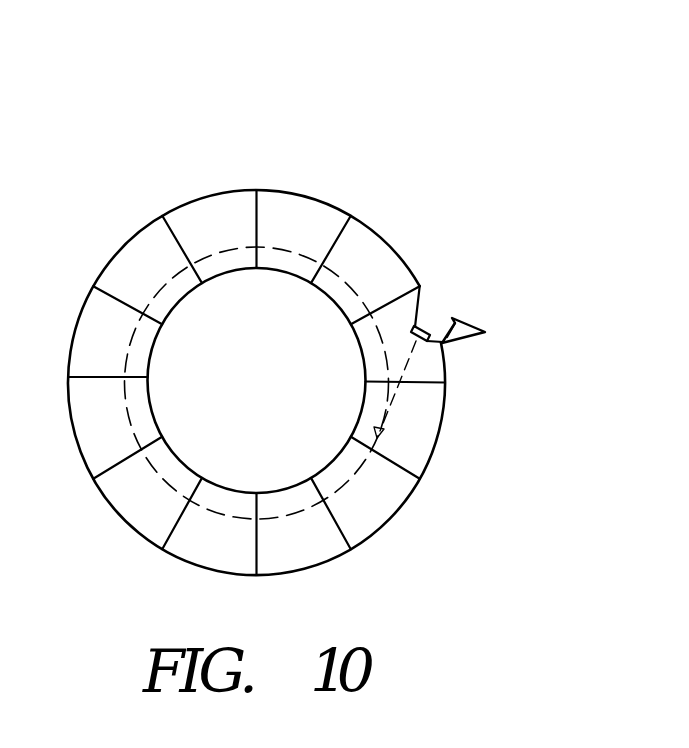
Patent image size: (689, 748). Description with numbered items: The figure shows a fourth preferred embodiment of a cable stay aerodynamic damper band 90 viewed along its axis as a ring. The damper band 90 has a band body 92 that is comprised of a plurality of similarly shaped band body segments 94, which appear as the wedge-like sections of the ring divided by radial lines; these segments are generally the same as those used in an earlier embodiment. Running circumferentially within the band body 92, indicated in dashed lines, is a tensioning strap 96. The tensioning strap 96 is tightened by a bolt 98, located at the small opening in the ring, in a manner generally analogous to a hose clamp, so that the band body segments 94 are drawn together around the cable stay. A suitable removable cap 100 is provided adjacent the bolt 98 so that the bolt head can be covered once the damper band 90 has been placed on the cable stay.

The cable stay aerodynamic damper band 90 is at (329, 348).
The band body 92 is at (380, 233).
The band body segments 94 is at (434, 447).
The tensioning strap 96 is at (176, 268).
The bolt 98 is at (433, 320).
The removable cap 100 is at (483, 327).